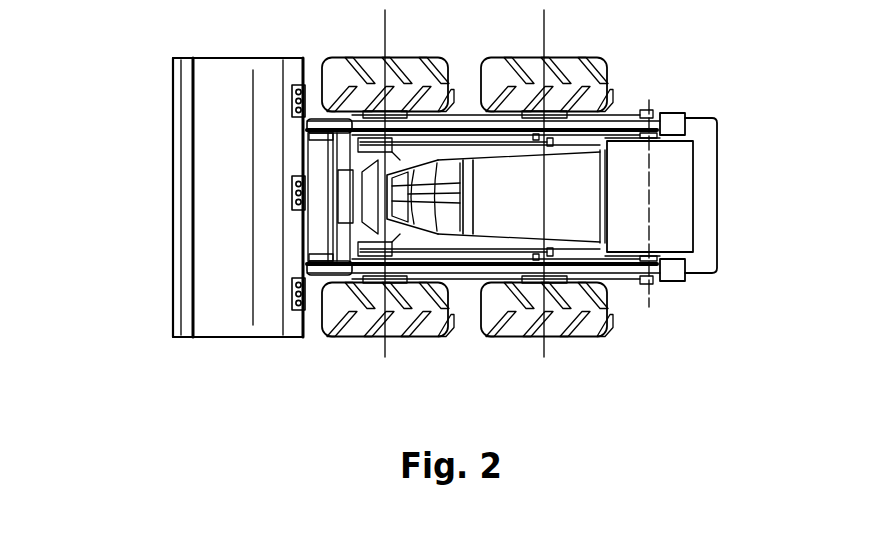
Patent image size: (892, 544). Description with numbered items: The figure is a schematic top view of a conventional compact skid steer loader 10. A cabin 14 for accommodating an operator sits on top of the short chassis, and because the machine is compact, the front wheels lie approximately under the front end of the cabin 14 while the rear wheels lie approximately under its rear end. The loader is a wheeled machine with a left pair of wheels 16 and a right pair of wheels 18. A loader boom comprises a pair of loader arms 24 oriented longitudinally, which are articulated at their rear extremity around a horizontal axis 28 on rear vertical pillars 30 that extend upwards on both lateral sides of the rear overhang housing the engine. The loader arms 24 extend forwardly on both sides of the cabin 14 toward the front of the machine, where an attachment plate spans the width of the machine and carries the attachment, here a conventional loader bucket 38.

The compact skid steer loader 10 is at (411, 211).
The cabin 14 is at (497, 205).
The left pair of wheels 16 is at (408, 327).
The right pair of wheels 18 is at (400, 62).
The loader arms 24 is at (462, 118).
The horizontal axis 28 is at (640, 97).
The rear vertical pillars 30 is at (678, 112).
The loader bucket 38 is at (227, 245).